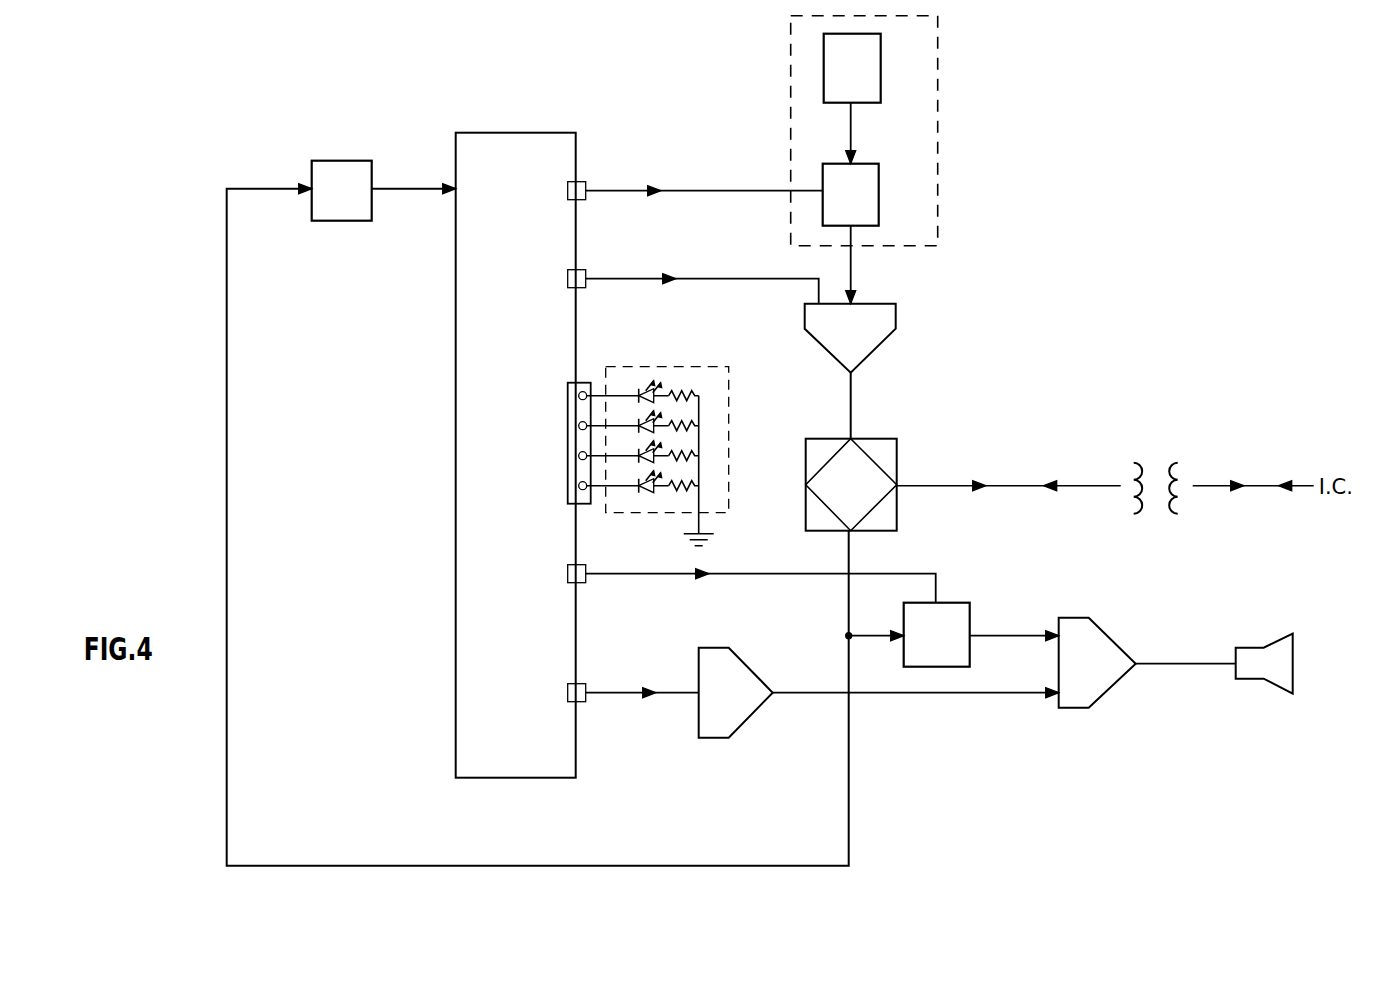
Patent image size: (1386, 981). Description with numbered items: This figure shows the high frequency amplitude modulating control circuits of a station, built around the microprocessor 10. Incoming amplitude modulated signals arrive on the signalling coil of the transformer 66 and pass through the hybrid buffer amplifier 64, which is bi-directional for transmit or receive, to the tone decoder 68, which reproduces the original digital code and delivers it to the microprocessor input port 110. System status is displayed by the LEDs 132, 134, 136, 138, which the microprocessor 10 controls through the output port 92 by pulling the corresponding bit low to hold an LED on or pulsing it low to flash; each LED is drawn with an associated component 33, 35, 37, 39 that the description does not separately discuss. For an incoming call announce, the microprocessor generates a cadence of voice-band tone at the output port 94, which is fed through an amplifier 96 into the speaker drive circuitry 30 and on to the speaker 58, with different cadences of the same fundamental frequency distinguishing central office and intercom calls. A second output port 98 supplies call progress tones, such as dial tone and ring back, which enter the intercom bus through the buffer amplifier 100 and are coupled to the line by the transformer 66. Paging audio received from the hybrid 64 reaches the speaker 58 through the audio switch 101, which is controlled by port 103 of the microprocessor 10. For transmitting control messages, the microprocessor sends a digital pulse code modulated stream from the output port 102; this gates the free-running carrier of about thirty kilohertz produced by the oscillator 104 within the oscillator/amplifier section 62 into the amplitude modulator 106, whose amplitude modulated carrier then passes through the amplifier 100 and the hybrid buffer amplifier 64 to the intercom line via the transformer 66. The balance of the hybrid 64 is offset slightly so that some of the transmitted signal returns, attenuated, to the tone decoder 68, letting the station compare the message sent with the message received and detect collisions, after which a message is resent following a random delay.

The microprocessor 10 is at (513, 743).
The speaker drive circuitry 30 is at (1118, 746).
The resistor 33 is at (697, 387).
The resistor 35 is at (697, 417).
The resistor 37 is at (697, 447).
The resistor 39 is at (697, 477).
The speaker 58 is at (1280, 675).
The oscillator/amplifier 62 is at (937, 108).
The hybrid buffer amplifier 64 is at (896, 455).
The transformer 66 is at (1163, 522).
The tone decoder 68 is at (340, 171).
The output port 92 is at (565, 375).
The output port 94 is at (632, 692).
The amplifier 96 is at (736, 709).
The second output port 98 is at (730, 277).
The buffer amplifier 100 is at (883, 318).
The audio switch 101 is at (959, 614).
The output port 102 is at (676, 189).
The port 103 is at (620, 572).
The oscillator 104 is at (880, 57).
The amplitude modulator 106 is at (878, 173).
The microprocessor input port 110 is at (397, 190).
The LED 132 is at (628, 388).
The LED 134 is at (628, 418).
The LED 136 is at (628, 448).
The LED 138 is at (628, 478).